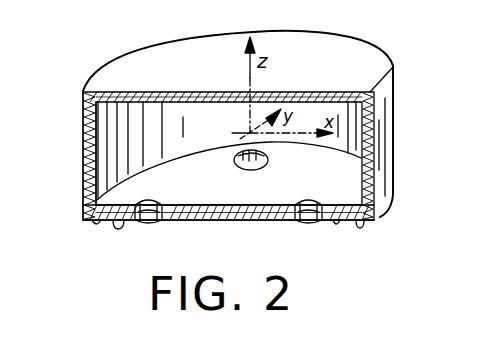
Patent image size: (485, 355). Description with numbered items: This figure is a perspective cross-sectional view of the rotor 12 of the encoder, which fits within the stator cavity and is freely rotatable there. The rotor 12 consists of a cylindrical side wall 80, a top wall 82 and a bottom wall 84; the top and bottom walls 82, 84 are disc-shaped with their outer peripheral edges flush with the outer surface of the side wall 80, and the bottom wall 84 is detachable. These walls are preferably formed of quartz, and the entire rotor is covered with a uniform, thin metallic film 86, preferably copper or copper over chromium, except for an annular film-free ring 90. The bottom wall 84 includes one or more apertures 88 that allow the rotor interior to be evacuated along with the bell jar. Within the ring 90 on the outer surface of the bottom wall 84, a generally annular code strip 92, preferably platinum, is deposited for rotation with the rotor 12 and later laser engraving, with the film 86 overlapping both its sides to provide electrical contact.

The rotor 12 is at (137, 51).
The cylindrical side wall 80 is at (90, 168).
The top wall 82 is at (195, 103).
The bottom wall 84 is at (220, 210).
The metallic film 86 is at (85, 120).
The apertures 88 is at (150, 202).
The annular film-free ring 90 is at (97, 227).
The code strip 92 is at (110, 224).